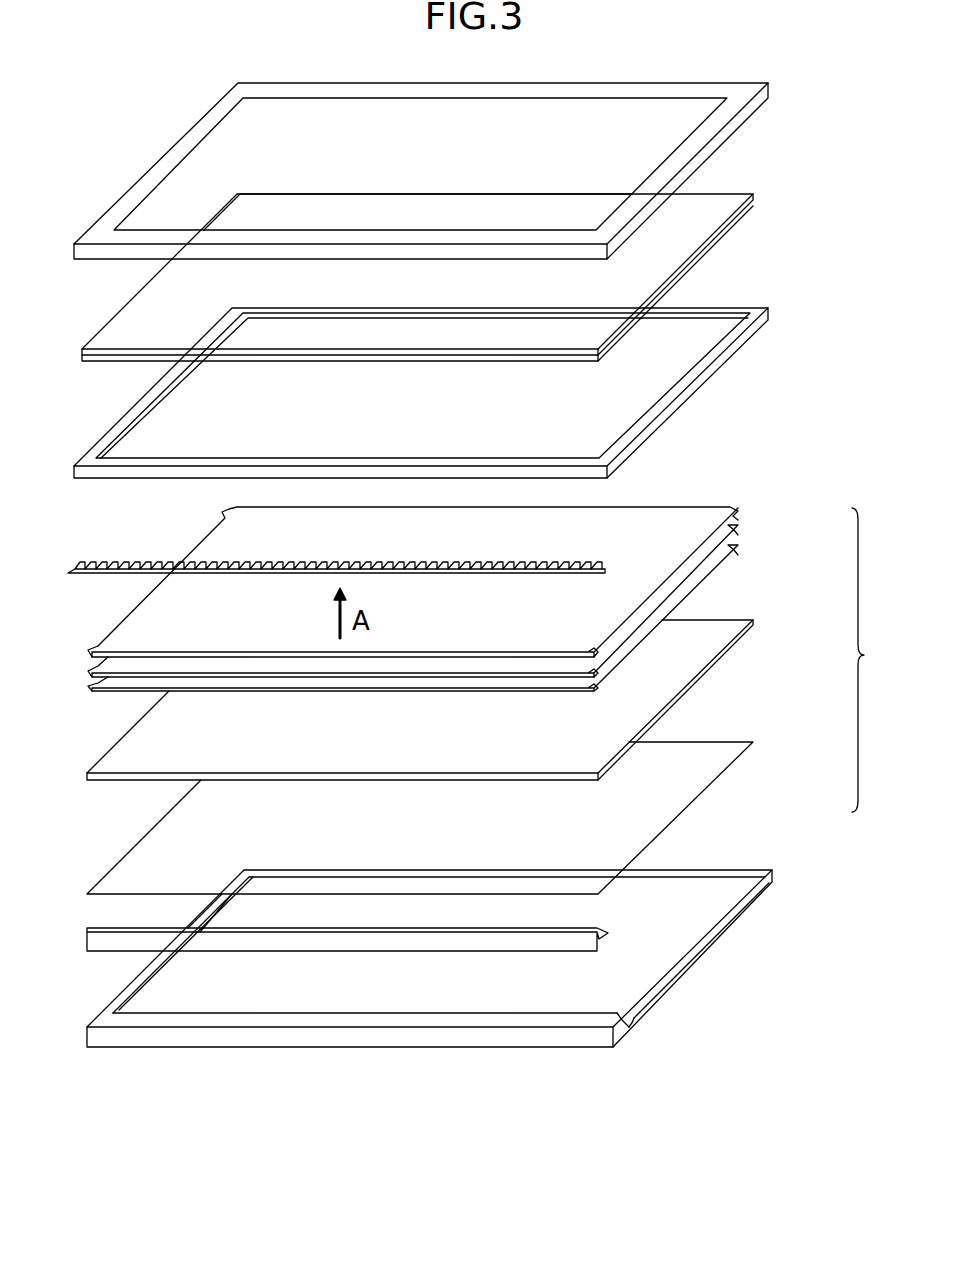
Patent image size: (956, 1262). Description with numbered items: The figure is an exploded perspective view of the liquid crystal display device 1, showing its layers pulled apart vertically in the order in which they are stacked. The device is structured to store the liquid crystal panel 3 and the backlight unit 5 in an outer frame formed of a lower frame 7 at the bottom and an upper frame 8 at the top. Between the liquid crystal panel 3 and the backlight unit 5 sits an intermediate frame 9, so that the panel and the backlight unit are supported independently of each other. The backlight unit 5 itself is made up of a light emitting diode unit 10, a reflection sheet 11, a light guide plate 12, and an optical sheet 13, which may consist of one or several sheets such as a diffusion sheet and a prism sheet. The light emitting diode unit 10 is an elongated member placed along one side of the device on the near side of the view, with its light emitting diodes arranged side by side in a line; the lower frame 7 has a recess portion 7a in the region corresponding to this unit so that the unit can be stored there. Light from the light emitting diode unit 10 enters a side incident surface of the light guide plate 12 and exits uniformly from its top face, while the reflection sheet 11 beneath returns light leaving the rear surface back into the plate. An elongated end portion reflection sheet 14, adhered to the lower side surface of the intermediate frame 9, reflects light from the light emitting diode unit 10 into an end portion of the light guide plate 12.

The liquid crystal display device 1 is at (185, 1130).
The liquid crystal panel 3 is at (756, 199).
The backlight unit 5 is at (871, 660).
The lower frame 7 is at (458, 951).
The recess portion 7a is at (587, 1017).
The upper frame 8 is at (772, 88).
The intermediate frame 9 is at (770, 312).
The light emitting diode unit 10 is at (608, 942).
The reflection sheet 11 is at (727, 746).
The light guide plate 12 is at (756, 622).
The optical sheet 13 is at (748, 522).
The end portion reflection sheet 14 is at (143, 562).